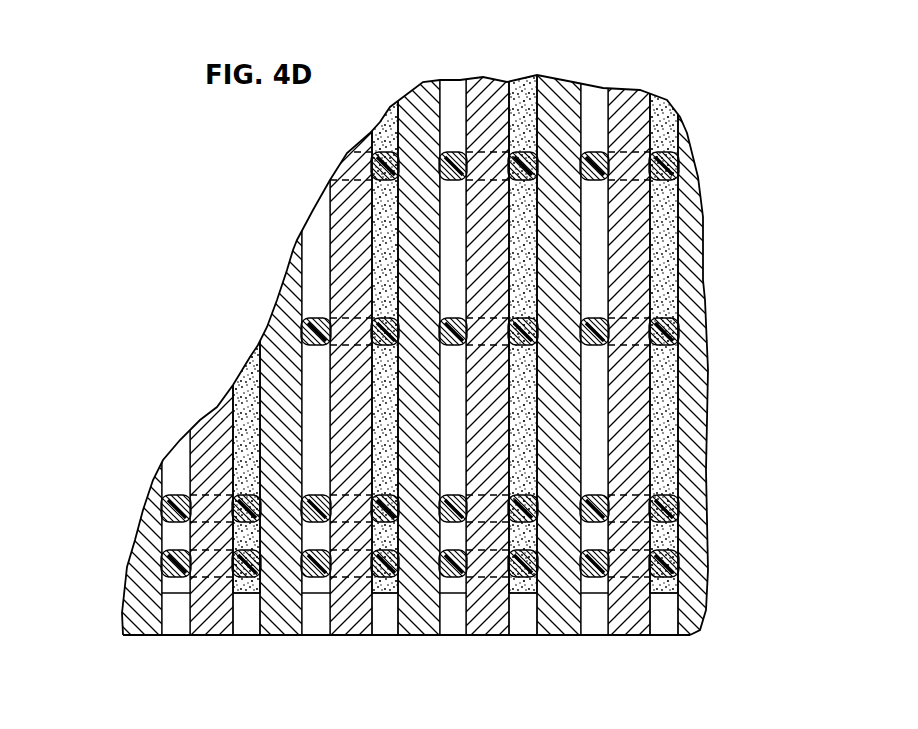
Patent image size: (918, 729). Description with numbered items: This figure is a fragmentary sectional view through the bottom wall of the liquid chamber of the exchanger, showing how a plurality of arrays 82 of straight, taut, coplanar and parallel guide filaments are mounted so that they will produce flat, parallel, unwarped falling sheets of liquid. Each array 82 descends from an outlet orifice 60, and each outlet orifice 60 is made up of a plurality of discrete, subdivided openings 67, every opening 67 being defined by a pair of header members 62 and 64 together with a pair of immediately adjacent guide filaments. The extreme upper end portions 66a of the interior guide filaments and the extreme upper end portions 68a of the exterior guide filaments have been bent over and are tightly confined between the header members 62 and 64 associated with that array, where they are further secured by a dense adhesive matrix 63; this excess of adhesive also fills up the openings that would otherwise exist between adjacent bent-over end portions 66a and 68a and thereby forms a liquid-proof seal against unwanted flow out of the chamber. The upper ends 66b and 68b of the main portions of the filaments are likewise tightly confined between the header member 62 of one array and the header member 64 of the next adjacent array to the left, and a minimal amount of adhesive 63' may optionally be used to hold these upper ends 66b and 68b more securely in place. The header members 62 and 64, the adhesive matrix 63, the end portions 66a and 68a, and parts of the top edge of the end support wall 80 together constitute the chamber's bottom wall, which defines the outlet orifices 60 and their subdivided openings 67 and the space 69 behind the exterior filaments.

The outlet orifice 60 is at (305, 368).
The header member 62 is at (340, 238).
The dense adhesive matrix 63 is at (492, 344).
The adhesive 63' is at (695, 299).
The header member 64 is at (430, 98).
The extreme upper end portion of interior guide filament 66a is at (387, 118).
The upper end of main portion of interior guide filament 66b is at (315, 320).
The discrete, subdivided opening 67 is at (315, 255).
The extreme upper end portion of exterior guide filament 68a is at (147, 633).
The upper end of main portion of exterior guide filament 68b is at (183, 593).
The space 69 is at (167, 535).
The end support wall 80 is at (383, 622).
The array of guide filaments 82 is at (288, 188).